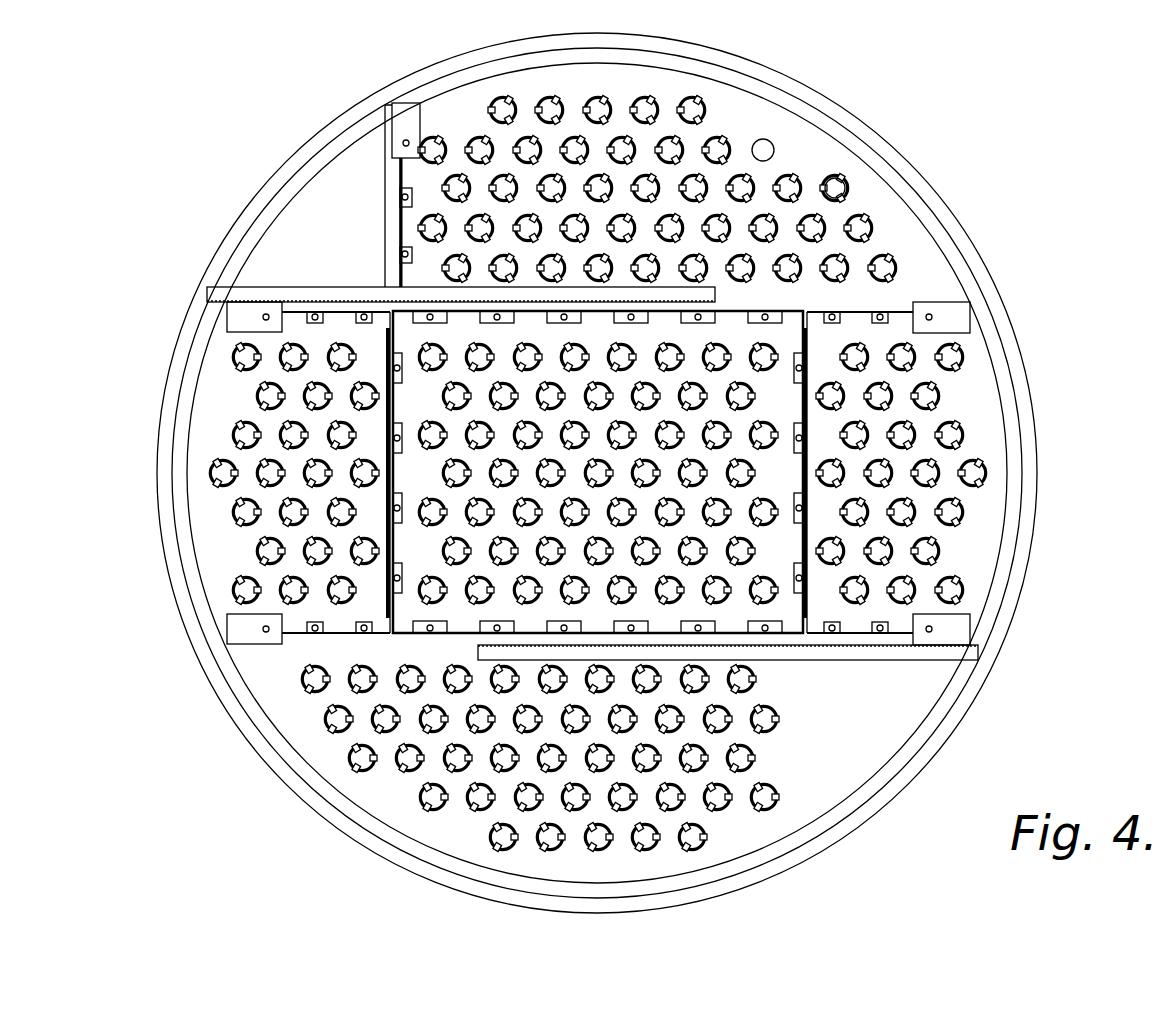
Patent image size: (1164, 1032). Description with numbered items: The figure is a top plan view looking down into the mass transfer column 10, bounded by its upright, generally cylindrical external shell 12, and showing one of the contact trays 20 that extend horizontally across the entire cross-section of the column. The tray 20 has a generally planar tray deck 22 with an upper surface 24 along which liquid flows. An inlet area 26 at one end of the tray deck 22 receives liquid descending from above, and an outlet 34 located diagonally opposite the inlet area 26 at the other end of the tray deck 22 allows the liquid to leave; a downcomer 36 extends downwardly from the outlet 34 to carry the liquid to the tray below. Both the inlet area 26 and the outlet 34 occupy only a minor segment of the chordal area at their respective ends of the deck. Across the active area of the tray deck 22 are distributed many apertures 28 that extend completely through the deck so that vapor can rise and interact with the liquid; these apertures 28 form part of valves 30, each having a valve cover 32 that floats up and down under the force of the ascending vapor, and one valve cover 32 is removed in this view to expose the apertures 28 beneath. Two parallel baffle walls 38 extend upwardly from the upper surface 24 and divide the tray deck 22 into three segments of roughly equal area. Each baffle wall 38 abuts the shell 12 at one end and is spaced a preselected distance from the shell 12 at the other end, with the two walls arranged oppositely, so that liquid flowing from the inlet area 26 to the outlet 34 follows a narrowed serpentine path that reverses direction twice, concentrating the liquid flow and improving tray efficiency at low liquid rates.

The mass transfer column 10 is at (1044, 381).
The external shell 12 is at (1038, 445).
The contact tray 20 is at (930, 274).
The tray deck 22 is at (985, 510).
The upper surface 24 is at (975, 542).
The inlet area 26 is at (918, 682).
The apertures 28 is at (765, 147).
The valve 30 is at (850, 179).
The valve cover 32 is at (838, 194).
The outlet 34 is at (318, 205).
The downcomer 36 is at (385, 152).
The baffle walls 38 is at (272, 295).